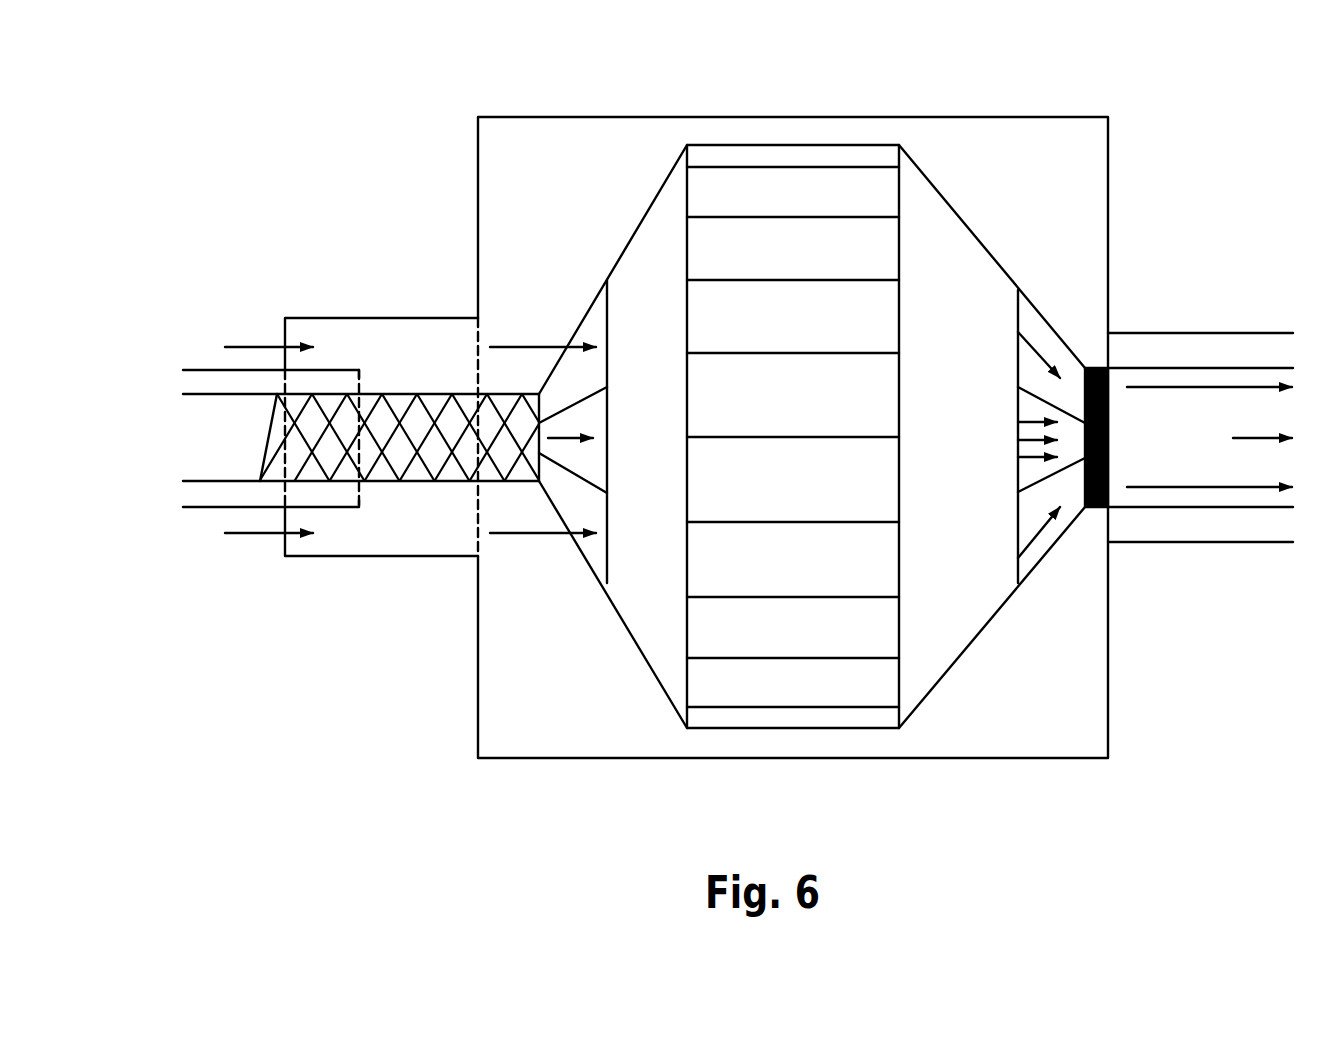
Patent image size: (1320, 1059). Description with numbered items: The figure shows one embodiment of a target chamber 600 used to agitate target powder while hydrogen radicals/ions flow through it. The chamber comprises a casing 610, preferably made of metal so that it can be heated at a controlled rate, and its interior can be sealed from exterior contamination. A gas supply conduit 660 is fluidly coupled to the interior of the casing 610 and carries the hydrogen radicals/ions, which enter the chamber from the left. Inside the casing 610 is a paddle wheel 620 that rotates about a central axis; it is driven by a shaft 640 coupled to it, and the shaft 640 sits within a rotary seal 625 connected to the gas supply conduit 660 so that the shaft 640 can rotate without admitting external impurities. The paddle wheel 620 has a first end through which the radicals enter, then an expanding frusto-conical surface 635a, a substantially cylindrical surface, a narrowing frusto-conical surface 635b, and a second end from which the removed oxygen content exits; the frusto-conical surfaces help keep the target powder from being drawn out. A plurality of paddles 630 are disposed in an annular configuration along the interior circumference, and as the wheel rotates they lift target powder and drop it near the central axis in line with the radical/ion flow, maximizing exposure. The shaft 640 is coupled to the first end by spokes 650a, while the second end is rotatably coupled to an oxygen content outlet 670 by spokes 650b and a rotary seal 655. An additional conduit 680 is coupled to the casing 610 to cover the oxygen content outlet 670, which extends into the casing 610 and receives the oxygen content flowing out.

The target chamber 600 is at (337, 57).
The casing 610 is at (1108, 240).
The paddle wheel 620 is at (708, 143).
The rotary seal 625 is at (203, 369).
The paddles 630 is at (822, 217).
The expanding frusto-conical surface 635a is at (678, 447).
The narrowing frusto-conical surface 635b is at (980, 447).
The shaft 640 is at (245, 447).
The spokes 650a is at (596, 569).
The spokes 650b is at (1086, 508).
The rotary seal 655 is at (1110, 372).
The gas supply conduit 660 is at (380, 318).
The oxygen content outlet 670 is at (1223, 508).
The additional conduit 680 is at (1233, 334).